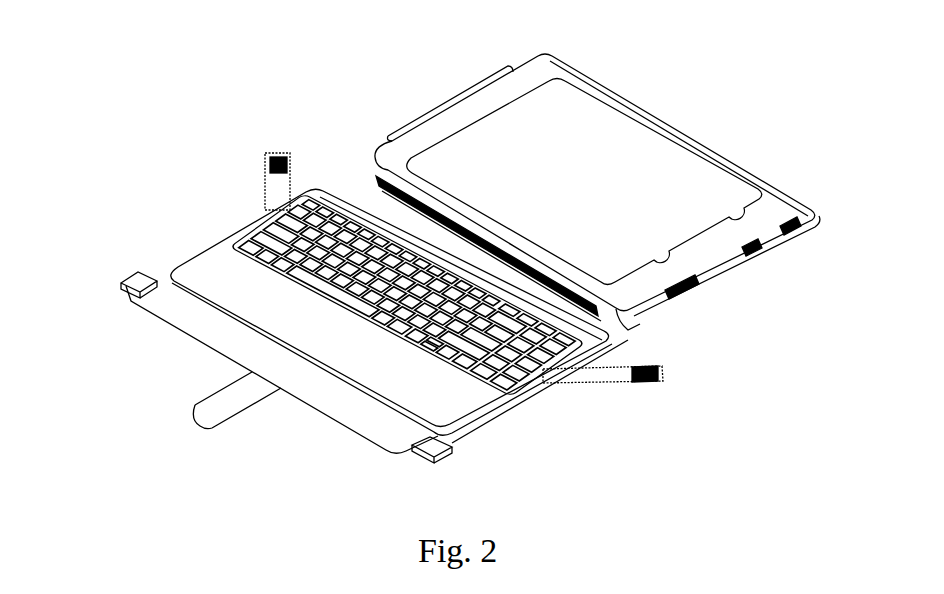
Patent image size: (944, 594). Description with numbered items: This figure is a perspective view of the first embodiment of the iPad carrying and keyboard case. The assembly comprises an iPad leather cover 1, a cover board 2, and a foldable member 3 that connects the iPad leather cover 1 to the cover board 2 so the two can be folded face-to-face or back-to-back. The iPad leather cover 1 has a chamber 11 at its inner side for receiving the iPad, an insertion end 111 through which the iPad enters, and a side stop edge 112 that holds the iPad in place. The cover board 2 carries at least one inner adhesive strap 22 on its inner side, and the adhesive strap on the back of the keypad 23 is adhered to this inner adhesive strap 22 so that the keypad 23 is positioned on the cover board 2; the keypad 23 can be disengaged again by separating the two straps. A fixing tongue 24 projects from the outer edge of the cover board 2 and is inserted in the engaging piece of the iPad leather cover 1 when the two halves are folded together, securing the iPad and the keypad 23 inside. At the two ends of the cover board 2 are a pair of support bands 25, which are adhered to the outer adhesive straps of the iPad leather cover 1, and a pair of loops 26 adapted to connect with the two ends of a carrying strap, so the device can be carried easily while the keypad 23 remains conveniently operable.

The iPad leather cover 1 is at (630, 104).
The chamber 11 is at (710, 190).
The insertion end 111 is at (532, 60).
The side stop edge 112 is at (467, 95).
The cover board 2 is at (358, 417).
The inner adhesive strap 22 is at (263, 230).
The keypad 23 is at (452, 398).
The fixing tongue 24 is at (215, 412).
The support band 25 is at (275, 187).
The loop 26 is at (133, 278).
The foldable member 3 is at (343, 183).